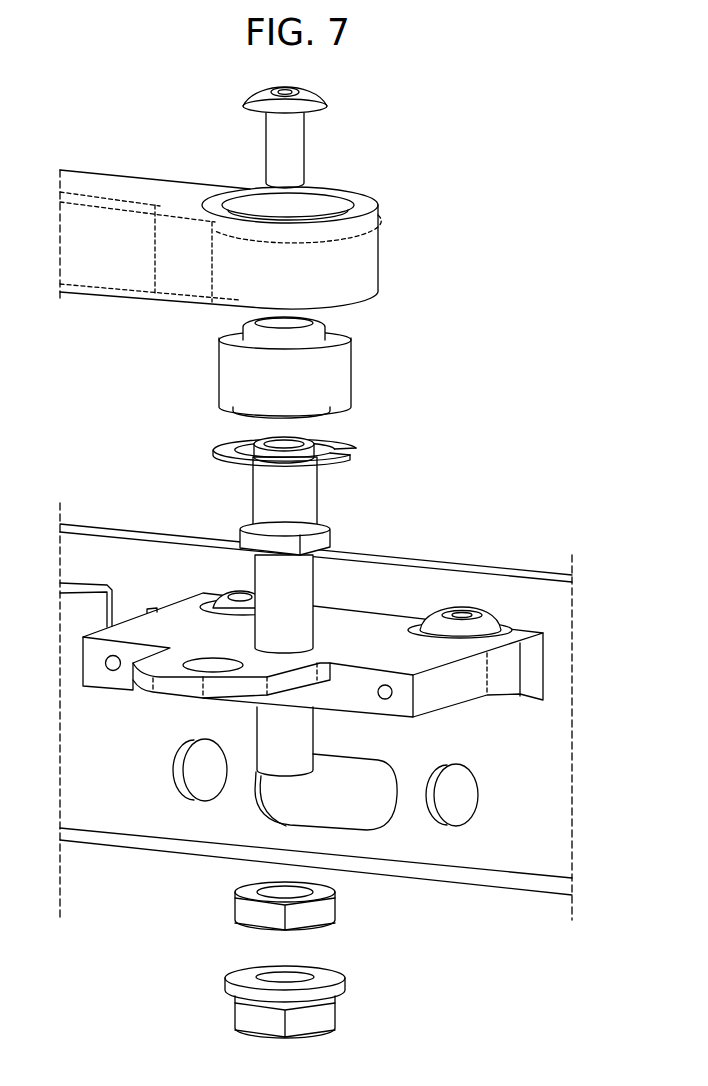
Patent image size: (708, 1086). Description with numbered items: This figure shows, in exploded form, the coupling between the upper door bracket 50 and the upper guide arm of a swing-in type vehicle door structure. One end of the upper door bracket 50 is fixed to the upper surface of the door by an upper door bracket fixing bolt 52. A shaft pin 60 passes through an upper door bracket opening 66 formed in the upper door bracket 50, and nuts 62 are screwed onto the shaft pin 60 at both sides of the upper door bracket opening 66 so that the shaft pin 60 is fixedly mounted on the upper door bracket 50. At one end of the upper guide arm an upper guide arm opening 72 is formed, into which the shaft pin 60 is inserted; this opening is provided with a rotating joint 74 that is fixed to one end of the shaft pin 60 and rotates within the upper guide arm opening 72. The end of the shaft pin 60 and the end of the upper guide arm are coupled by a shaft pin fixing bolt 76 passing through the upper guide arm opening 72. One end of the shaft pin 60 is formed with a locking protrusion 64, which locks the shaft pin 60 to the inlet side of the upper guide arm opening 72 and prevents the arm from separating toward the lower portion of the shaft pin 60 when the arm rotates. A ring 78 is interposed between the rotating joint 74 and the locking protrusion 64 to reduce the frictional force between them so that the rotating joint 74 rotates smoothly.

The upper door bracket 50 is at (462, 673).
The upper door bracket fixing bolt 52 is at (488, 625).
The shaft pin 60 is at (300, 582).
The nuts 62 is at (327, 912).
The locking protrusion 64 is at (327, 538).
The upper door bracket opening 66 is at (292, 647).
The upper guide arm opening 72 is at (300, 210).
The rotating joint 74 is at (343, 372).
The shaft pin fixing bolt 76 is at (313, 97).
The ring 78 is at (352, 448).